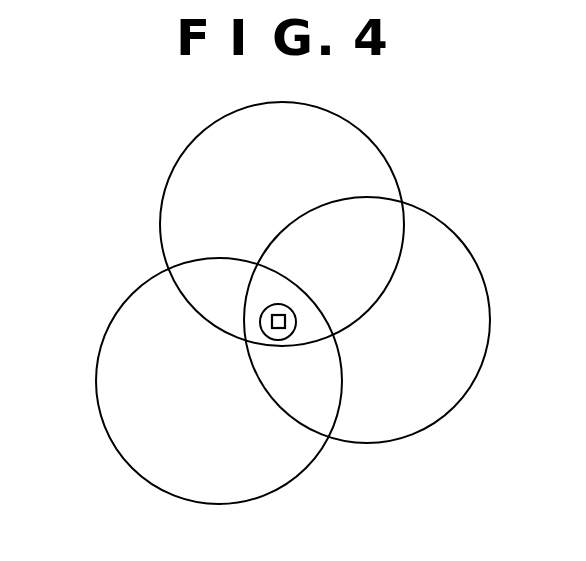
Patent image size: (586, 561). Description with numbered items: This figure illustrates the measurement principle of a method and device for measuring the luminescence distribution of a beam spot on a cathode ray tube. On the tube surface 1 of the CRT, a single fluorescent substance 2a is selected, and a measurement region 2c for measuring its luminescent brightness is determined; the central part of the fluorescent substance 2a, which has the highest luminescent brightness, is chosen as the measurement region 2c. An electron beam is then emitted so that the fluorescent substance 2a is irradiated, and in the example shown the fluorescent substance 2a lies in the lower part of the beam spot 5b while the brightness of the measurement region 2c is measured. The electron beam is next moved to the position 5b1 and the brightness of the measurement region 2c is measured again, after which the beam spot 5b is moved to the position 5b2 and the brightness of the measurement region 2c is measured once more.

The tube surface 1 is at (90, 219).
The fluorescent substance 2a is at (293, 312).
The measurement region 2c is at (278, 328).
The beam spot 5b is at (383, 158).
The beam spot position 5b1 is at (487, 352).
The beam spot position 5b2 is at (97, 367).